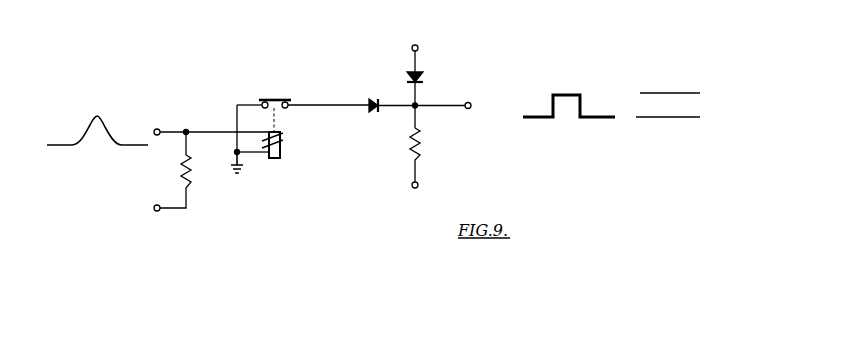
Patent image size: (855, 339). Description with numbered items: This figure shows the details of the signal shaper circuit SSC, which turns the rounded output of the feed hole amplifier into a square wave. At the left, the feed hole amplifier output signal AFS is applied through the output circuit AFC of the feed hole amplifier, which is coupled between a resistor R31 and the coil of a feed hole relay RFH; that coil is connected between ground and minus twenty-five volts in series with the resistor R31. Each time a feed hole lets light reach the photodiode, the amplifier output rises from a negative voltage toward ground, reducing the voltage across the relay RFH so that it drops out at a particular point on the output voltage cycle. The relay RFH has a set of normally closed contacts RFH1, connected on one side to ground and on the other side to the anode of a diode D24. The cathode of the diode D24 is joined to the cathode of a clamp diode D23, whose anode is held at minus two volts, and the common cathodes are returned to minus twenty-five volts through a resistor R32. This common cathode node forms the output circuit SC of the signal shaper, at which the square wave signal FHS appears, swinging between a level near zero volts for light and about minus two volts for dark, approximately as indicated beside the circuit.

The feed hole amplifier output signal AFS is at (106, 100).
The output circuit of the feed hole amplifier AFC is at (172, 129).
The resistor R31 is at (182, 167).
The signal shaper circuit SSC is at (236, 68).
The normally closed contacts RFH1 is at (268, 100).
The feed hole relay RFH is at (286, 141).
The diode D24 is at (372, 97).
The clamp diode D23 is at (422, 76).
The output circuit of the signal shaper SC is at (452, 105).
The resistor R32 is at (423, 145).
The square wave signal FHS is at (635, 102).